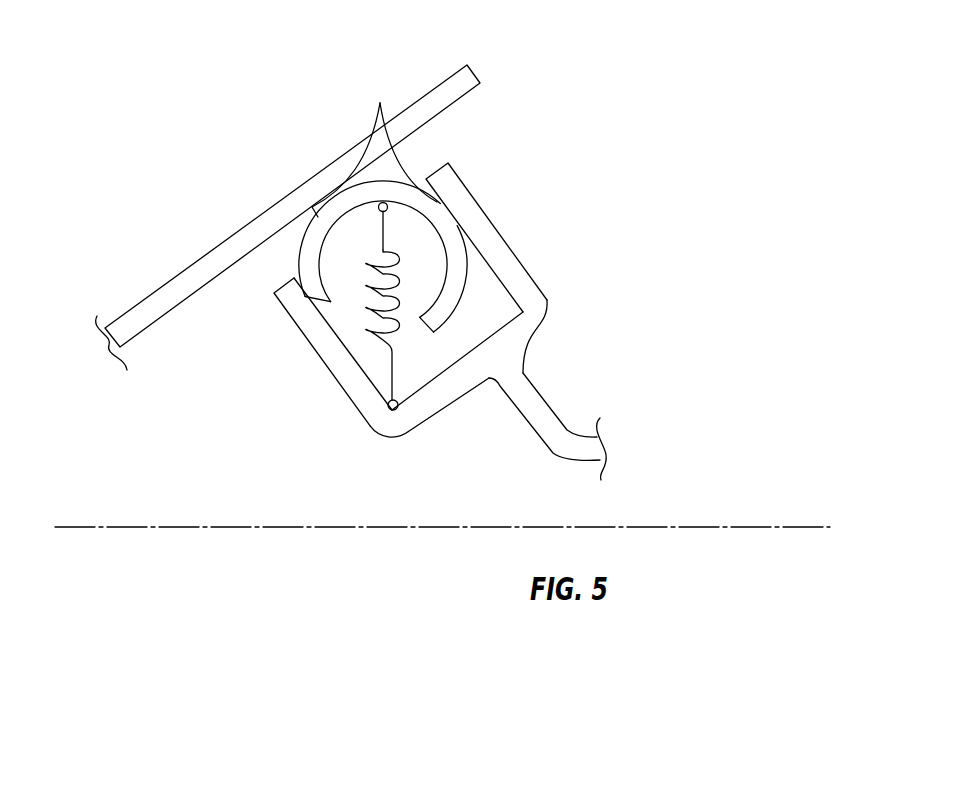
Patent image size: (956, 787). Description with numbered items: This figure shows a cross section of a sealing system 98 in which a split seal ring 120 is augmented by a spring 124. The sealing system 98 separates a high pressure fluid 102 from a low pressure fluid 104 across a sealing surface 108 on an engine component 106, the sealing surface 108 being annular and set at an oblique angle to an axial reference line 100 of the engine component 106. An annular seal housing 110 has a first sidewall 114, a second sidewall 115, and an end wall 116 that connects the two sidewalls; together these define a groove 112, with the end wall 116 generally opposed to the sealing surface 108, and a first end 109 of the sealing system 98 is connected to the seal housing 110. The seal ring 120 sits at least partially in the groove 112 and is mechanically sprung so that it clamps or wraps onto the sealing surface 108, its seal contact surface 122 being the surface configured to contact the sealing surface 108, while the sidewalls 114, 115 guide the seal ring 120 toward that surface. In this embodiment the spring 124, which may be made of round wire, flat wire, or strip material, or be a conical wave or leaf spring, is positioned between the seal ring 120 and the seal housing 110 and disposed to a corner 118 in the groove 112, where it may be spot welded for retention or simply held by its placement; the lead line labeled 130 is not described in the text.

The sealing system 98 is at (212, 122).
The axial reference line 100 is at (190, 527).
The high pressure fluid 102 is at (222, 445).
The low pressure fluid 104 is at (468, 94).
The engine component 106 is at (213, 250).
The sealing surface 108 is at (201, 288).
The first end 109 is at (254, 221).
The seal housing 110 is at (468, 407).
The groove 112 is at (426, 328).
The first sidewall 114 is at (496, 288).
The second sidewall 115 is at (343, 335).
The end wall 116 is at (470, 360).
The corner 118 is at (402, 403).
The seal ring 120 is at (303, 240).
The seal contact surface 122 is at (380, 108).
The spring 124 is at (390, 368).
The panel end 130 is at (452, 77).